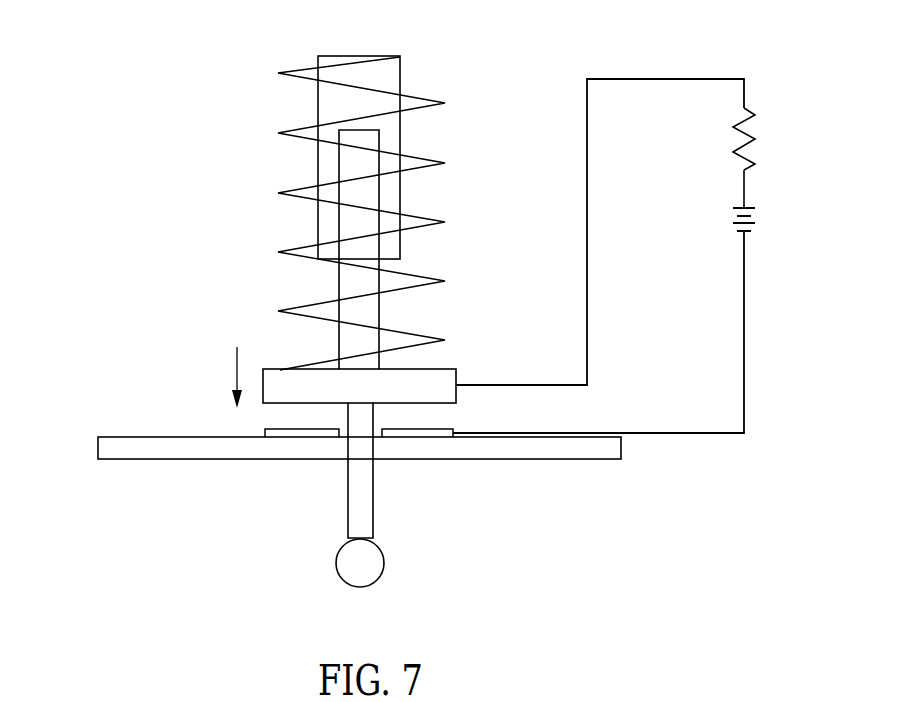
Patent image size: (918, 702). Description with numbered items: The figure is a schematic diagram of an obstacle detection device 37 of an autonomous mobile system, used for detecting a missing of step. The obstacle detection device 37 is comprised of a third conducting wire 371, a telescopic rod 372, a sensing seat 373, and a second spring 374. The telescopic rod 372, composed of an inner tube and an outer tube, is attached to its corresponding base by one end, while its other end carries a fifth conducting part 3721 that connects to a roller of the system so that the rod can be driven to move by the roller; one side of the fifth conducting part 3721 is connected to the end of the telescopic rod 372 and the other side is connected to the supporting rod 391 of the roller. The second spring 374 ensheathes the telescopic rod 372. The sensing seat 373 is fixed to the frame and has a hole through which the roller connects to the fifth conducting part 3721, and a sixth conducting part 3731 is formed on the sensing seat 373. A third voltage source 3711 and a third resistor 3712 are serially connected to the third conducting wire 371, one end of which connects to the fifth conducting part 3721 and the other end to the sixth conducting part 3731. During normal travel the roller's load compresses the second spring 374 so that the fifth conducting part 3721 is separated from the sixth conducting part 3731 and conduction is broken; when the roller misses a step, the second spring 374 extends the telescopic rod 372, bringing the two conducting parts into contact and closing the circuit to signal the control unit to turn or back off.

The obstacle detection device 37 is at (76, 80).
The third conducting wire 371 is at (633, 79).
The third voltage source 3711 is at (757, 209).
The third resistor 3712 is at (755, 120).
The telescopic rod 372 is at (402, 74).
The fifth conducting part 3721 is at (456, 378).
The sensing seat 373 is at (110, 436).
The sixth conducting part 3731 is at (453, 429).
The second spring 374 is at (298, 128).
The supporting rod 391 is at (366, 506).